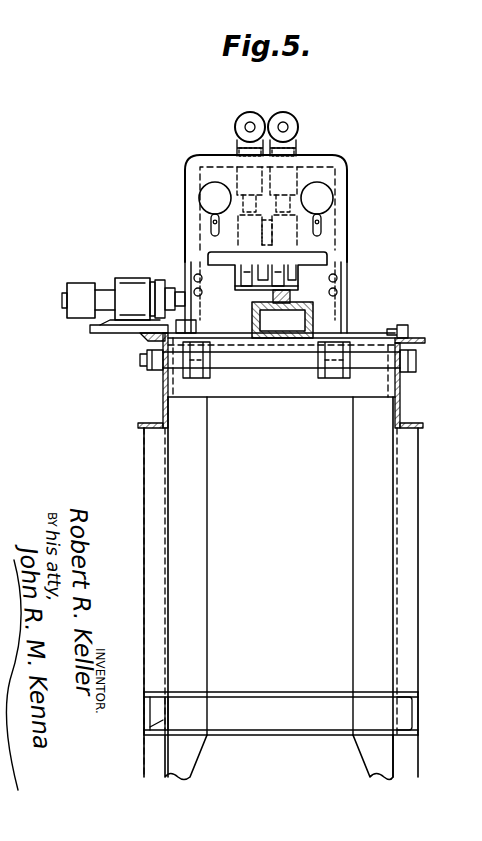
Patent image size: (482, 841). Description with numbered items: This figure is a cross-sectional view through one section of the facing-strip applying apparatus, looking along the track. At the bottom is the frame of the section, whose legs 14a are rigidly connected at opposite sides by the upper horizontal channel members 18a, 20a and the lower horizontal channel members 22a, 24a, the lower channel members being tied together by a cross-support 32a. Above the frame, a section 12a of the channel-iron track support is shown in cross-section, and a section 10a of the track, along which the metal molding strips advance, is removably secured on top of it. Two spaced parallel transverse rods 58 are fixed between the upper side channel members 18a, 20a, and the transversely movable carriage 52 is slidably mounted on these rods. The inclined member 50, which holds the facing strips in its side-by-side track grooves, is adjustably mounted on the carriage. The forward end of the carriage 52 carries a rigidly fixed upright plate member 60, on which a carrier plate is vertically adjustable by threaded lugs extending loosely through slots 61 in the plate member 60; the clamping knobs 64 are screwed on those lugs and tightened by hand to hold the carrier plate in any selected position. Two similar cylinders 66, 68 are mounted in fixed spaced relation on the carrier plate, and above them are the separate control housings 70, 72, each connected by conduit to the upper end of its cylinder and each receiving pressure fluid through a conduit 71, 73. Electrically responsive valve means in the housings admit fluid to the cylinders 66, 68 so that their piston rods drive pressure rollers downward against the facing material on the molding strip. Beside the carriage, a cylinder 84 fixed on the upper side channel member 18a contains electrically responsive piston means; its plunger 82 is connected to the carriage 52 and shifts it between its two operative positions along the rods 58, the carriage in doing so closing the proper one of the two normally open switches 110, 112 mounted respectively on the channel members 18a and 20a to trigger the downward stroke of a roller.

The track section 10a is at (292, 298).
The track support section 12a is at (315, 312).
The leg 14a is at (353, 522).
The upper horizontal channel member 18a is at (163, 410).
The upper horizontal channel member 20a is at (400, 415).
The lower horizontal channel member 22a is at (160, 735).
The lower horizontal channel member 24a is at (407, 698).
The cross-support 32a is at (313, 733).
The inclined member 50 is at (243, 278).
The carriage 52 is at (359, 287).
The transverse rod 58 is at (147, 361).
The plate member 60 is at (200, 172).
The slot 61 is at (211, 222).
The clamping knob 64 is at (205, 193).
The cylinder 66 is at (238, 165).
The cylinder 68 is at (298, 158).
The control housing 70 is at (242, 118).
The conduit 71 is at (251, 122).
The control housing 72 is at (294, 118).
The conduit 73 is at (284, 122).
The plunger 82 is at (186, 300).
The cylinder 84 is at (128, 283).
The switch 110 is at (143, 340).
The switch 112 is at (408, 332).